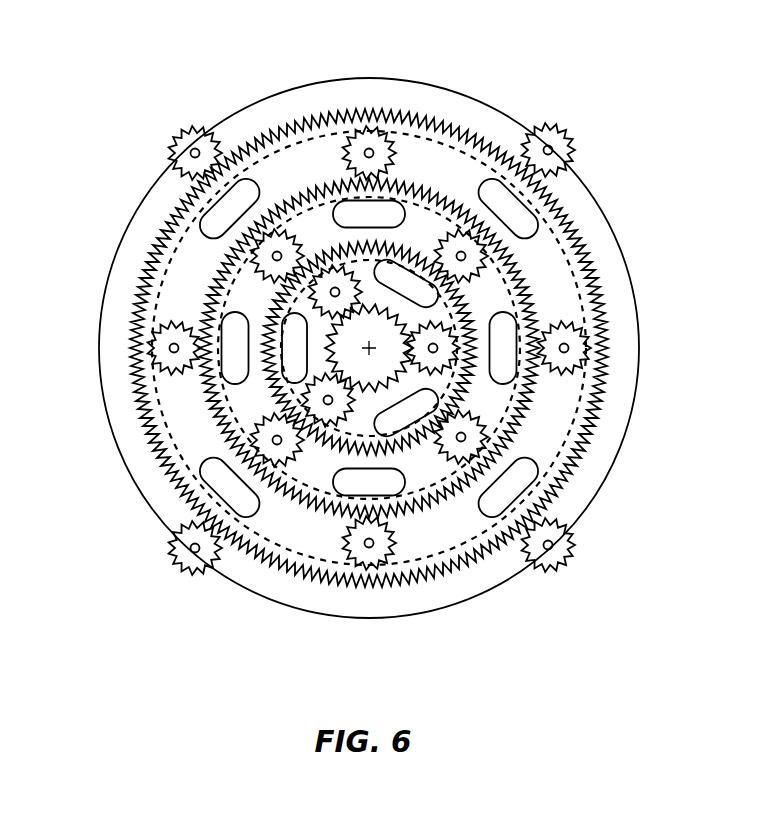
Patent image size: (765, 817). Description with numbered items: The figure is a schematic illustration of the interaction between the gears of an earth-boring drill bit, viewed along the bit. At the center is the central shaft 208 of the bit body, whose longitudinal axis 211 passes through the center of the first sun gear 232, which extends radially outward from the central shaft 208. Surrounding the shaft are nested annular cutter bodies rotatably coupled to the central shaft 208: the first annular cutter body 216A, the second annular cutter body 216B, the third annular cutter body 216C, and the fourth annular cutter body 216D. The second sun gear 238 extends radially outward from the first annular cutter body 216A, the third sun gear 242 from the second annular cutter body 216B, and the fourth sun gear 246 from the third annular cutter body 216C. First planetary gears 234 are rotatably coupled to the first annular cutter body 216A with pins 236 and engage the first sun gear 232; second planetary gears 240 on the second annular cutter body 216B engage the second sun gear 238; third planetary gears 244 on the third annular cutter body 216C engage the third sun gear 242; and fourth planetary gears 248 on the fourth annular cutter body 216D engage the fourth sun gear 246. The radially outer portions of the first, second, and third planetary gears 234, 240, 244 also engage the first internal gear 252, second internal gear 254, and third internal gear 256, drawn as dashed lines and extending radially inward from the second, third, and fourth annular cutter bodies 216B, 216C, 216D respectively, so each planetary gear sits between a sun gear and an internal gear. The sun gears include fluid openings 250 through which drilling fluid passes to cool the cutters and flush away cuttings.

The central shaft 208 is at (383, 365).
The longitudinal axis 211 is at (375, 350).
The first annular cutter body 216A is at (343, 433).
The second annular cutter body 216B is at (322, 230).
The third annular cutter body 216C is at (188, 270).
The fourth annular cutter body 216D is at (140, 459).
The first sun gear 232 is at (384, 302).
The first planetary gears 234 is at (452, 330).
The pins 236 is at (575, 543).
The second sun gear 238 is at (419, 449).
The second planetary gears 240 is at (482, 433).
The third sun gear 242 is at (295, 188).
The third planetary gears 244 is at (163, 352).
The fourth sun gear 246 is at (360, 593).
The fourth planetary gears 248 is at (187, 146).
The fluid opening 250 is at (232, 373).
The first internal gear 252 is at (290, 305).
The second internal gear 254 is at (220, 260).
The third internal gear 256 is at (150, 414).